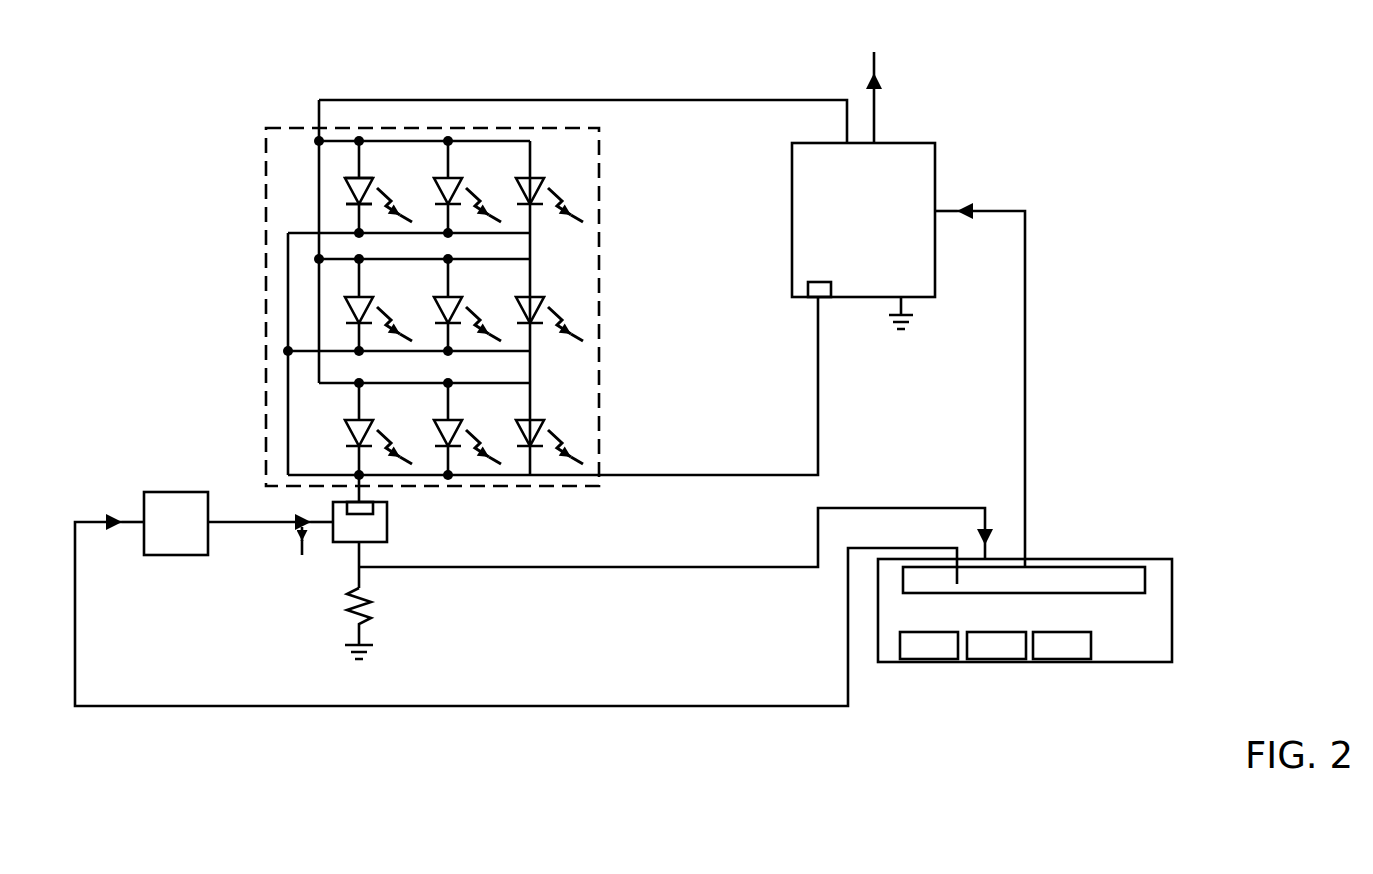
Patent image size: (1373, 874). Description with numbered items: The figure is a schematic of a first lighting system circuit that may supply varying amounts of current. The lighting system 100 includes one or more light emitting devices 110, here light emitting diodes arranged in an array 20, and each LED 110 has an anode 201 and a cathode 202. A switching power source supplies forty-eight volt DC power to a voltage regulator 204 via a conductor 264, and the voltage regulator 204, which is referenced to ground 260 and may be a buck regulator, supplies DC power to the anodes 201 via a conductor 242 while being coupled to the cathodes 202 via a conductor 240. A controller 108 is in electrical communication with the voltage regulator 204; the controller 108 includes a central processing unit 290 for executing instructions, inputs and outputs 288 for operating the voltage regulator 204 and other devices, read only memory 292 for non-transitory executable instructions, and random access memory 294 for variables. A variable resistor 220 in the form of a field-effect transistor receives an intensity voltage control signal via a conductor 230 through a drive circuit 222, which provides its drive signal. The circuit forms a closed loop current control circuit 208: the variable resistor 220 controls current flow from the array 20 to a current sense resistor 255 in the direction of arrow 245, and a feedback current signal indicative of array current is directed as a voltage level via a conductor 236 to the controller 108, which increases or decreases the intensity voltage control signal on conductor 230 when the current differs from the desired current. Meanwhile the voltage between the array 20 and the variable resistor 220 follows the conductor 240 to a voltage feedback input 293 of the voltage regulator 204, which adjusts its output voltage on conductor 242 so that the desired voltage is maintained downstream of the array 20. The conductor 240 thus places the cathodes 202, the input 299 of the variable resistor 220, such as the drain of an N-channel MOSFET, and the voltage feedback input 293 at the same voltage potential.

The lighting system 100 is at (250, 125).
The array 20 is at (461, 308).
The light emitting devices 110 is at (398, 176).
The anode 201 is at (352, 178).
The cathode 202 is at (355, 204).
The conductor 242 is at (589, 100).
The conductor 264 is at (876, 112).
The voltage regulator 204 is at (863, 220).
The voltage feedback input 293 is at (820, 292).
The ground 260 is at (906, 324).
The conductor 240 is at (820, 465).
The drive circuit 222 is at (180, 492).
The conductor 230 is at (84, 521).
The input 299 is at (345, 510).
The variable resistor 220 is at (388, 536).
The arrow 245 is at (300, 530).
The conductor 236 is at (424, 568).
The current sense resistor 255 is at (366, 610).
The closed loop current control circuit 208 is at (688, 512).
The inputs and outputs 288 is at (1024, 580).
The controller 108 is at (1025, 610).
The central processing unit 290 is at (929, 645).
The read only memory 292 is at (996, 645).
The random access memory 294 is at (1062, 645).